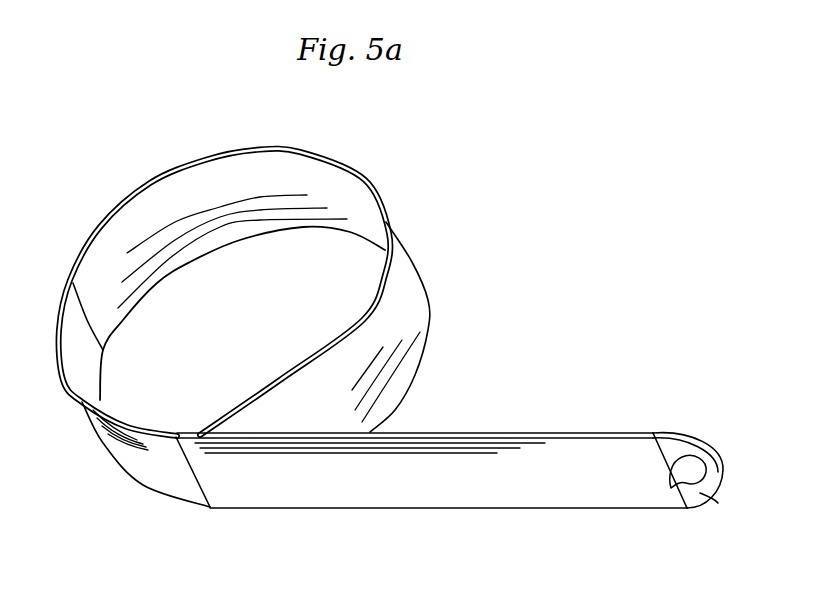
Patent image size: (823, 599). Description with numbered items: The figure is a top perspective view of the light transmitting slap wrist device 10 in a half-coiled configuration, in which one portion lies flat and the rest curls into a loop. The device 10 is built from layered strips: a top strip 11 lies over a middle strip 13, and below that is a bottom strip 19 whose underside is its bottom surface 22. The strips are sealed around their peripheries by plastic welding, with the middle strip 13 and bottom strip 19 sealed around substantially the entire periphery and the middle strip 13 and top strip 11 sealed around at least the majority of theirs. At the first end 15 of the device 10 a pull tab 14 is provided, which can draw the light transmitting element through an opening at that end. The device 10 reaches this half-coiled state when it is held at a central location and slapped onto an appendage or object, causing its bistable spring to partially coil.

The light transmitting slap wrist device 10 is at (410, 362).
The top strip 11 is at (578, 488).
The middle strip 13 is at (705, 493).
The pull tab 14 is at (692, 471).
The first end 15 is at (717, 477).
The bottom strip 19 is at (157, 283).
The bottom surface 22 is at (94, 286).